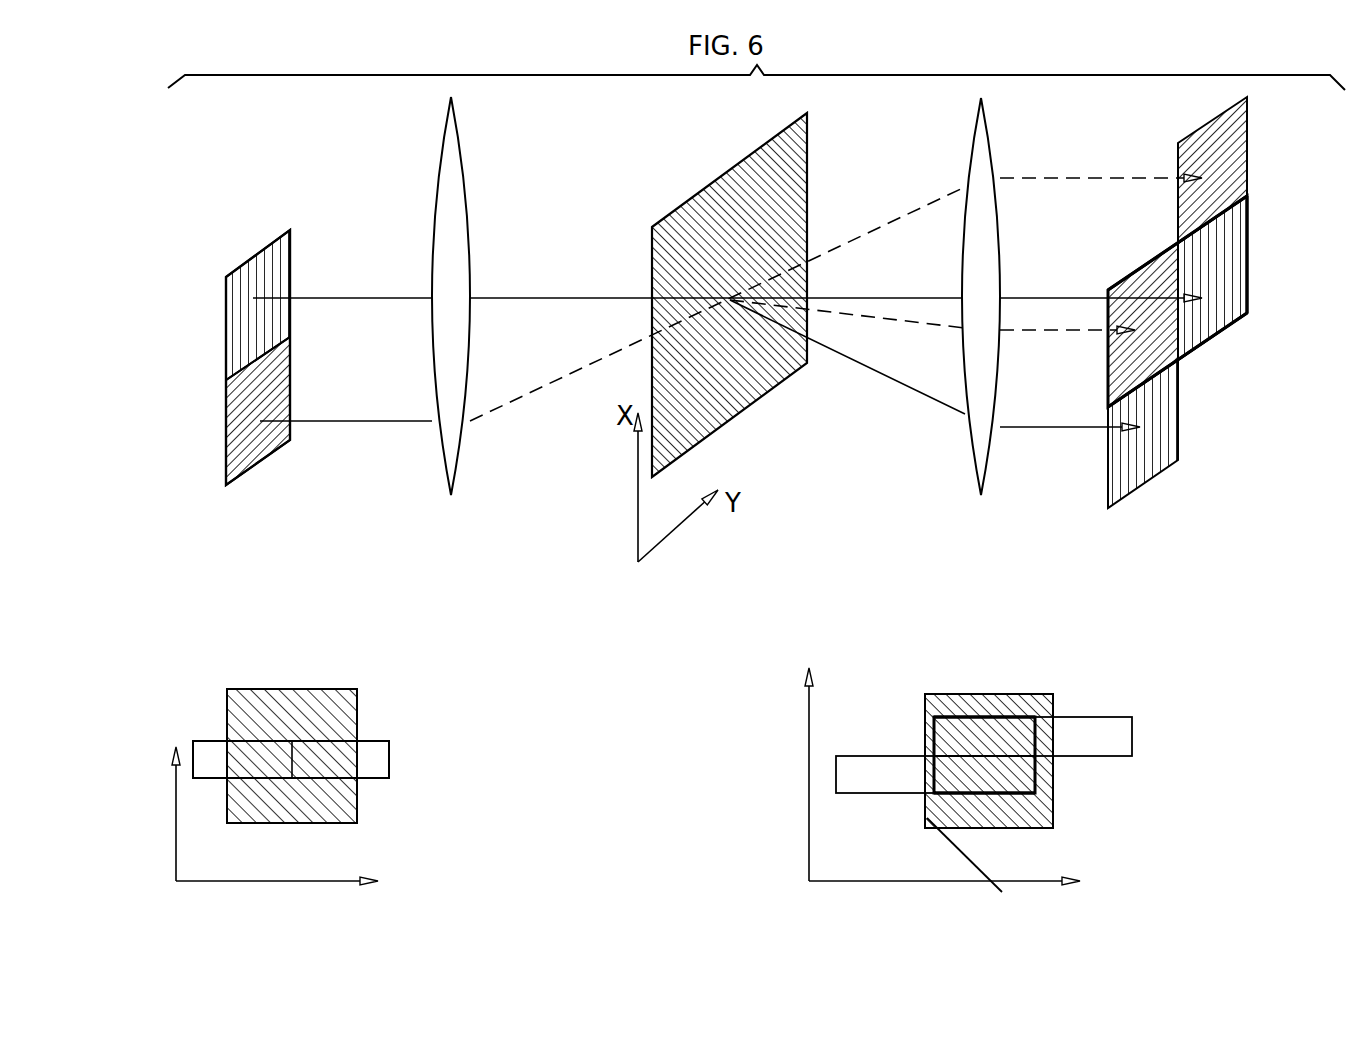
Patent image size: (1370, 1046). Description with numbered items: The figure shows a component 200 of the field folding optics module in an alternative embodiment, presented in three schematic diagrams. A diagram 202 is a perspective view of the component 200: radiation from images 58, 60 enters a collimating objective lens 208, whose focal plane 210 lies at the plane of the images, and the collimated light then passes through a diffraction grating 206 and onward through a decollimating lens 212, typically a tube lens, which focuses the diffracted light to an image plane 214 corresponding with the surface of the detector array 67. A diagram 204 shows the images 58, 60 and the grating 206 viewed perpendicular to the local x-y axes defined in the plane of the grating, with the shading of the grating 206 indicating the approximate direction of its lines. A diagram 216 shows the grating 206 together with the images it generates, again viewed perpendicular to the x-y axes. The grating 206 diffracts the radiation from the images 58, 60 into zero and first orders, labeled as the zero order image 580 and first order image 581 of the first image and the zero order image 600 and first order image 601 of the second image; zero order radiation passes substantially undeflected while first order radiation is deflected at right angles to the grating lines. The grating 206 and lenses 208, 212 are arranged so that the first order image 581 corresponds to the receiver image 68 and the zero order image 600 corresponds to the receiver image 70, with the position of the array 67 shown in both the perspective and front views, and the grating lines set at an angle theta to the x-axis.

The component 200 is at (333, 114).
The diagram 202 is at (179, 452).
The diagram 204 is at (417, 842).
The diffraction grating 206 is at (738, 166).
The collimating objective lens 208 is at (455, 490).
The focal plane 210 is at (298, 556).
The decollimating lens 212 is at (985, 492).
The image plane 214 is at (1182, 508).
The diagram 216 is at (742, 825).
The image 58 is at (240, 478).
The image 60 is at (258, 262).
The zero order image 580 is at (1240, 142).
The first order image 581 is at (1130, 278).
The zero order image 600 is at (1228, 275).
The first order image 601 is at (1165, 425).
The detector array 67 is at (1220, 338).
The receiver image 68 is at (1153, 268).
The receiver image 70 is at (1228, 245).